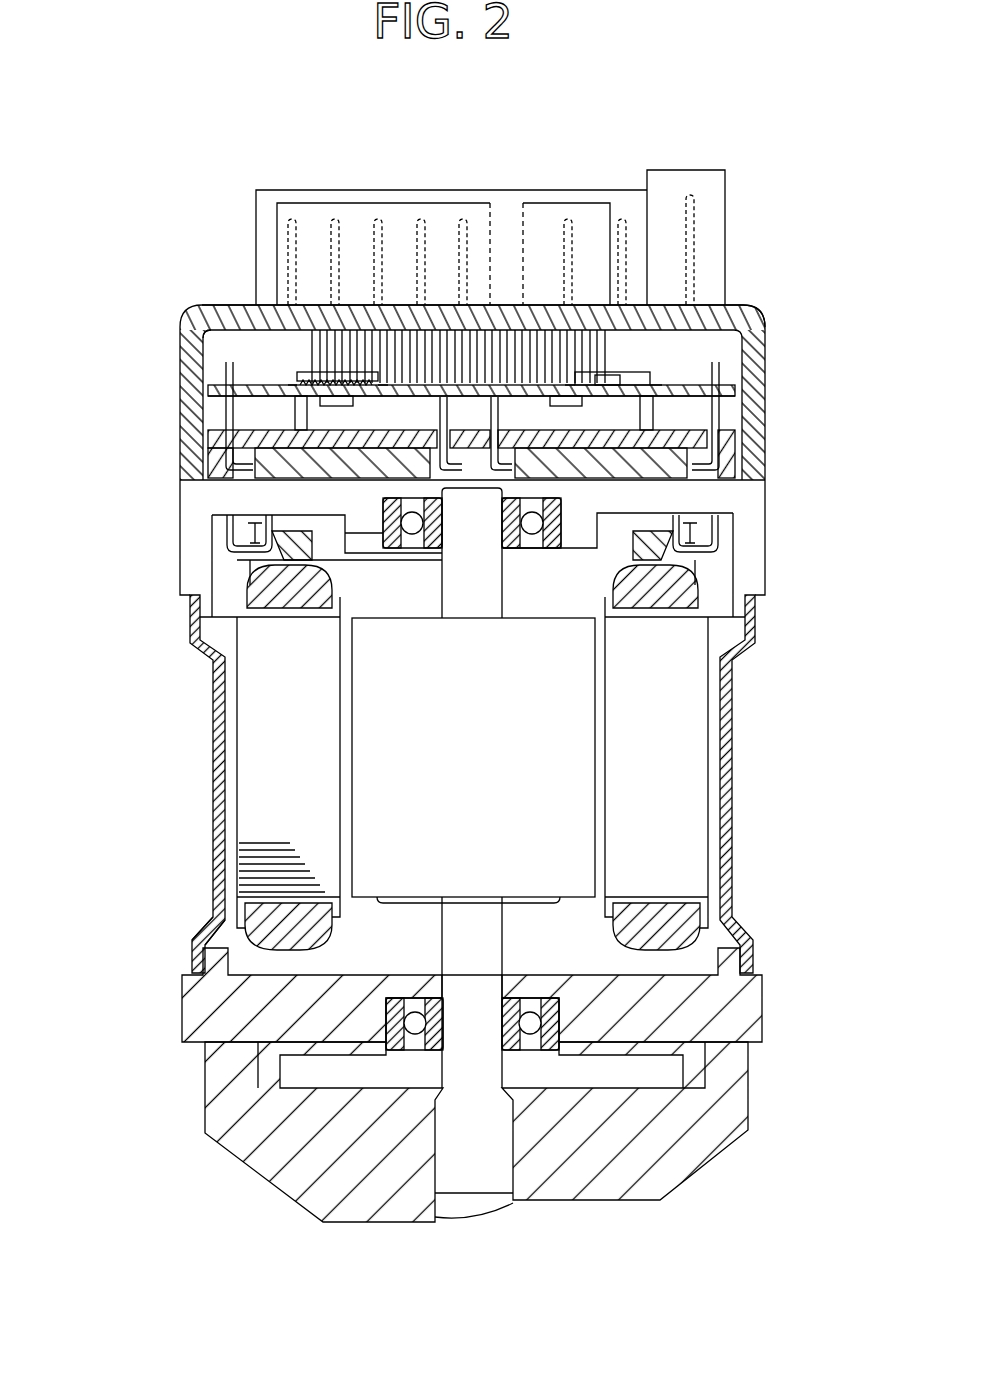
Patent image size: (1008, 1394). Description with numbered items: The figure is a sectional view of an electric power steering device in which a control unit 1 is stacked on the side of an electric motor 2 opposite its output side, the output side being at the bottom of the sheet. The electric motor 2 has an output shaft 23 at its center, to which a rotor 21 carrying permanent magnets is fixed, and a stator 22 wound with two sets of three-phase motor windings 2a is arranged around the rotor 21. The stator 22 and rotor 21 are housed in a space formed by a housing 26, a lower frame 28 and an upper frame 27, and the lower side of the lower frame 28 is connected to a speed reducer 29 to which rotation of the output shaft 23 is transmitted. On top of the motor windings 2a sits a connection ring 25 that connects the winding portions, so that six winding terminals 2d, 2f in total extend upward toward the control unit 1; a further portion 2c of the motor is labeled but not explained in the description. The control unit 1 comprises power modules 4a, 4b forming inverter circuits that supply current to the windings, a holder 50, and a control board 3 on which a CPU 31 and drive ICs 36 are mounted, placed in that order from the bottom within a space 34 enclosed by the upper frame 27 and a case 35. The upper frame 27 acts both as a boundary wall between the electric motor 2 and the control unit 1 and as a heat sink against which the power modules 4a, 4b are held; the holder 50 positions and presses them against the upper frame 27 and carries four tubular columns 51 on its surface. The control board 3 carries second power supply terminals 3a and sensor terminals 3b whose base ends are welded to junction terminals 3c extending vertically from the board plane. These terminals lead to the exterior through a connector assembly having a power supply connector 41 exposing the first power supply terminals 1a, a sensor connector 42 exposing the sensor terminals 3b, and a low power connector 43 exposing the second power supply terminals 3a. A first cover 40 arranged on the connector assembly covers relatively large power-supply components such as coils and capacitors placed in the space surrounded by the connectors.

The control unit 1 is at (166, 384).
The first power supply terminals 1a is at (696, 210).
The electric motor 2 is at (450, 784).
The motor windings 2a is at (208, 646).
The housing upper opening 2c is at (746, 320).
The winding terminals 2d is at (252, 545).
The winding terminals 2f is at (232, 346).
The control board 3 is at (730, 385).
The second power supply terminals 3a is at (570, 220).
The sensor terminals 3b is at (338, 220).
The junction terminals 3c is at (600, 350).
The power module 4a is at (688, 468).
The power module 4b is at (277, 470).
The rotor 21 is at (578, 797).
The stator 22 is at (240, 832).
The output shaft 23 is at (503, 956).
The connection ring 25 is at (250, 580).
The housing 26 is at (208, 928).
The upper frame 27 is at (178, 490).
The lower frame 28 is at (182, 1018).
The speed reducer 29 is at (203, 1090).
The CPU 31 is at (300, 376).
The space 34 is at (180, 312).
The case 35 is at (182, 437).
The drive ICs 36 is at (648, 378).
The first cover 40 is at (550, 200).
The power supply connector 41 is at (680, 168).
The sensor connector 42 is at (270, 188).
The low power connector 43 is at (535, 188).
The holder 50 is at (733, 441).
The tubular columns 51 is at (660, 404).